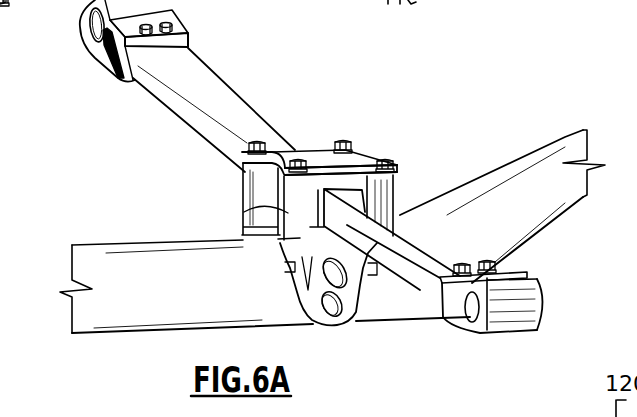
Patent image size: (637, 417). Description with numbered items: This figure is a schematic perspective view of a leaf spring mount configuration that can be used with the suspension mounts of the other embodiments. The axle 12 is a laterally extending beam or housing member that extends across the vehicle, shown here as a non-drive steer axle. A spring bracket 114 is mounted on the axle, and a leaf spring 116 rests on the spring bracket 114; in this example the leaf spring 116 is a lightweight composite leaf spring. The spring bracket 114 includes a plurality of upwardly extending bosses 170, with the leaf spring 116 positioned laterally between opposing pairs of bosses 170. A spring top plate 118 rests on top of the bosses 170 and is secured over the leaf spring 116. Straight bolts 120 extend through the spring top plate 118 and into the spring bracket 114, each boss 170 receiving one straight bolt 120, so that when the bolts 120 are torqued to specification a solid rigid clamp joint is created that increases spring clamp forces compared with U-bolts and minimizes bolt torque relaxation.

The axle 12 is at (131, 312).
The spring bracket 114 is at (285, 267).
The leaf spring 116 is at (210, 80).
The spring top plate 118 is at (356, 160).
The straight bolts 120 is at (250, 155).
The bosses 170 is at (402, 193).